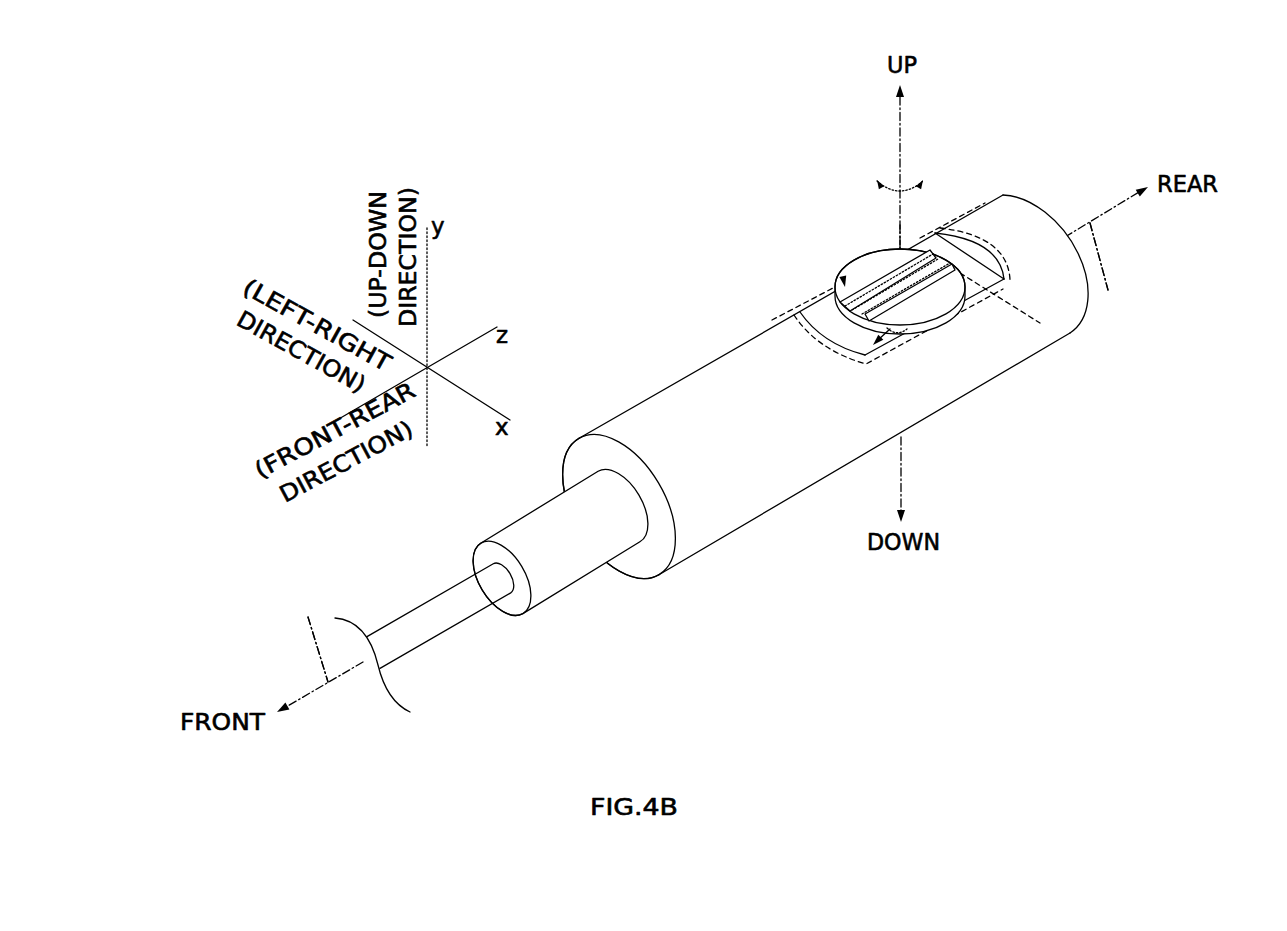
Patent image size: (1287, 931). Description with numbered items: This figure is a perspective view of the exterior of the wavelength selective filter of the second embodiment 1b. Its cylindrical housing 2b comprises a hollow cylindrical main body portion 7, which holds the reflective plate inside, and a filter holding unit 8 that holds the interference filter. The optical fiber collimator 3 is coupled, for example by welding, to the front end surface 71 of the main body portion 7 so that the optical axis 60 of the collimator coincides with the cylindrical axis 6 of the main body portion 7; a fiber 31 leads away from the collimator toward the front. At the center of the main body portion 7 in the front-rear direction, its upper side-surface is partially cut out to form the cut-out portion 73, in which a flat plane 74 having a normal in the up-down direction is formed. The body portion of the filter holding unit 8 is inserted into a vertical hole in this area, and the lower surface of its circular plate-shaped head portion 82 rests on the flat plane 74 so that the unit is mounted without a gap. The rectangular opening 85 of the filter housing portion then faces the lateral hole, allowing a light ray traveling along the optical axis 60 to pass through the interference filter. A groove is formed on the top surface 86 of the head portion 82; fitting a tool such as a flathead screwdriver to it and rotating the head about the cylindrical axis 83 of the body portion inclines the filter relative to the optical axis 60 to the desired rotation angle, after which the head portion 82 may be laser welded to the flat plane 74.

The second embodiment 1b is at (674, 265).
The cylindrical housing 2b is at (1057, 397).
The optical fiber collimator 3 is at (518, 527).
The cable 31 is at (440, 600).
The cylindrical axis 6 is at (721, 467).
The optical axis 60 is at (708, 452).
The main body portion 7 is at (970, 370).
The front end surface 71 is at (638, 566).
The cut-out portion 73 is at (1040, 323).
The flat plane 74 is at (910, 327).
The filter holding unit 8 is at (955, 318).
The head portion 82 is at (867, 265).
The cylindrical axis 83 is at (900, 223).
The opening 85 is at (843, 276).
The top surface 86 is at (888, 268).